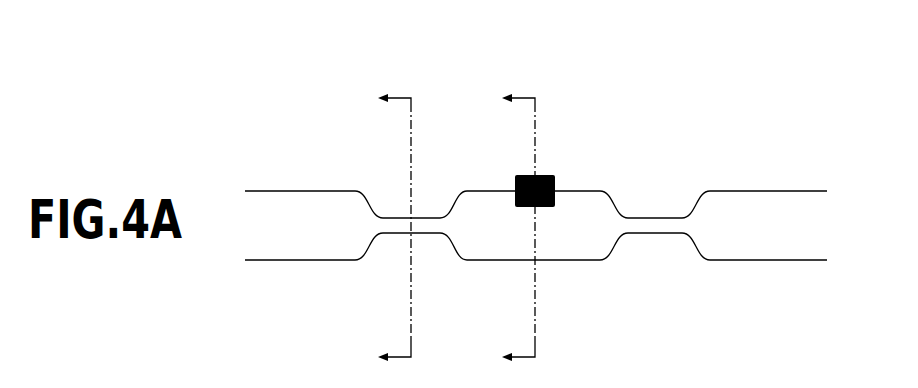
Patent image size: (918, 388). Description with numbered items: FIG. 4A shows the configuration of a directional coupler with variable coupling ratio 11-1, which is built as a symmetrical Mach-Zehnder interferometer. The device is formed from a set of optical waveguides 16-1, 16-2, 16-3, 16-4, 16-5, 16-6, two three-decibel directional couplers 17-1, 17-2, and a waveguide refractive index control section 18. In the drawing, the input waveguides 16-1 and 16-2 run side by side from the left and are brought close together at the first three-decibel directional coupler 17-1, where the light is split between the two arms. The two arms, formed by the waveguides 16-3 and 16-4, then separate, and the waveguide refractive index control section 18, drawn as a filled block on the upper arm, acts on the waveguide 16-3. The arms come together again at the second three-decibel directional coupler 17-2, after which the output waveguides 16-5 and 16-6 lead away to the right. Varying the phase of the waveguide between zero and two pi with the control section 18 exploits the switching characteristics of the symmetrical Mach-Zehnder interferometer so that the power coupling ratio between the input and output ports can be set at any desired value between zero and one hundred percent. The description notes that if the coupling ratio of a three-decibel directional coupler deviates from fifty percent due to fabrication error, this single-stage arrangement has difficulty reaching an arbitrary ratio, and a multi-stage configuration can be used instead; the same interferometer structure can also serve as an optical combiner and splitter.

The directional coupler with variable coupling ratio 11-1 is at (616, 86).
The optical waveguide 16-1 is at (288, 191).
The optical waveguide 16-2 is at (285, 260).
The optical waveguide 16-3 is at (492, 191).
The optical waveguide 16-4 is at (488, 260).
The optical waveguide 16-5 is at (755, 191).
The optical waveguide 16-6 is at (753, 260).
The 3-dB directional coupler 17-1 is at (425, 233).
The 3-dB directional coupler 17-2 is at (652, 233).
The waveguide refractive index control section 18 is at (548, 175).